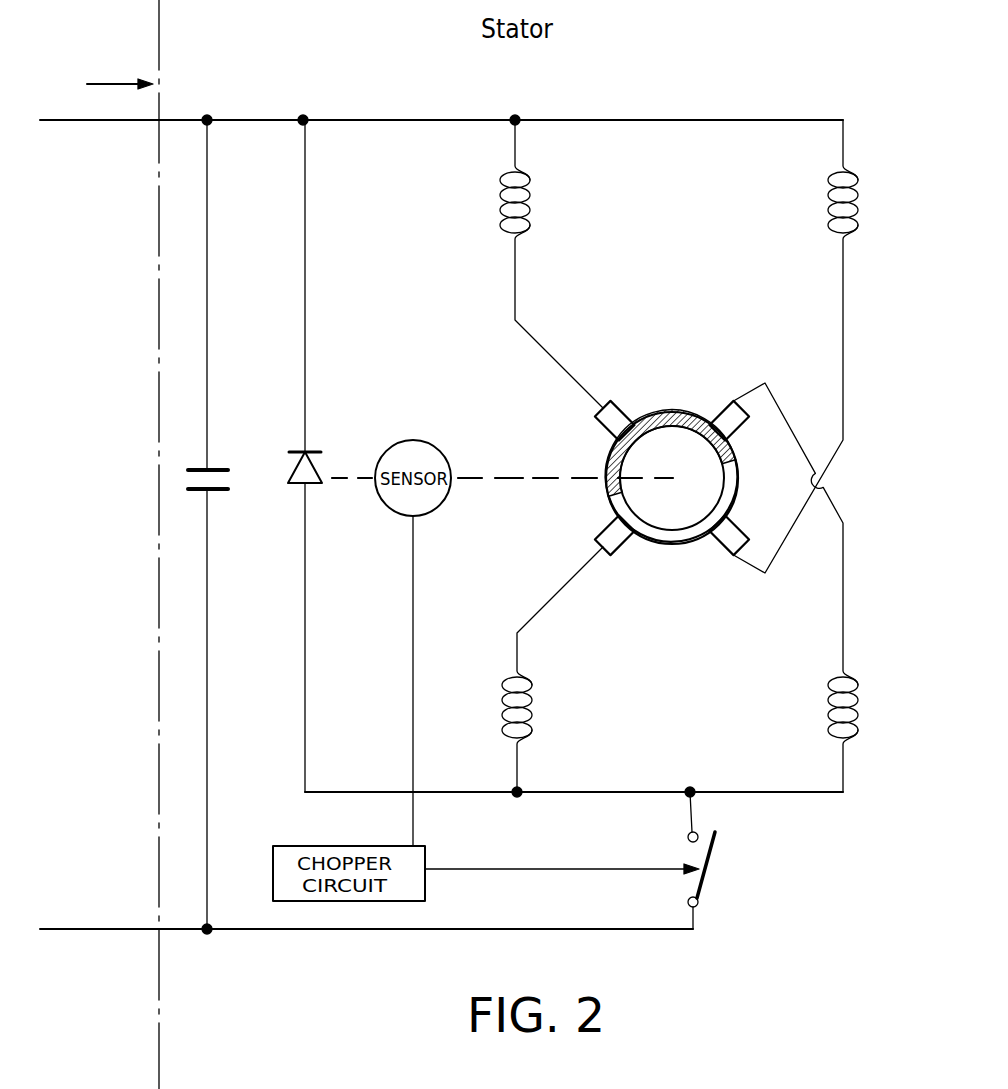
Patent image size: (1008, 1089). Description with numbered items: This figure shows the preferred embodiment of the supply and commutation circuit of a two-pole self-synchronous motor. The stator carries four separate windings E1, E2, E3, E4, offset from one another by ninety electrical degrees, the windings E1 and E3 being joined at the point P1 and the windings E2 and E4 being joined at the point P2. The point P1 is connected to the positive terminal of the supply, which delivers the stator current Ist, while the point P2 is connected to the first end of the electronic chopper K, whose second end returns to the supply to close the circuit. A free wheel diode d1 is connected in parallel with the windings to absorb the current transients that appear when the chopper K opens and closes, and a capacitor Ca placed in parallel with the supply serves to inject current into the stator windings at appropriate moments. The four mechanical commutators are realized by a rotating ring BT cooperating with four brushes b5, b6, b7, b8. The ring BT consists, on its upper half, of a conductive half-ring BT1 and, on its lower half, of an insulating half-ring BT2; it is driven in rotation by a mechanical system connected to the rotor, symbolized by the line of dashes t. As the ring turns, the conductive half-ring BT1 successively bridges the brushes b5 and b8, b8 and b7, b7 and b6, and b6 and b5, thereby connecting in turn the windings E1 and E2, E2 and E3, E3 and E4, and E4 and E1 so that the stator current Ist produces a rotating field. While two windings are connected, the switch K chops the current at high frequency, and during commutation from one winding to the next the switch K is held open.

The stator current Ist is at (120, 69).
The capacitor Ca is at (217, 524).
The free wheel diode d1 is at (319, 456).
The line of dashes t is at (466, 476).
The point P1 is at (514, 118).
The point P2 is at (516, 796).
The stator winding E1 is at (551, 264).
The stator winding E2 is at (552, 669).
The stator winding E3 is at (813, 346).
The stator winding E4 is at (811, 587).
The rotating ring BT is at (645, 498).
The conductive half-ring BT1 is at (690, 417).
The insulating half-ring BT2 is at (683, 545).
The brush b5 is at (608, 419).
The brush b6 is at (734, 418).
The brush b7 is at (734, 540).
The brush b8 is at (610, 535).
The chopper K is at (711, 860).